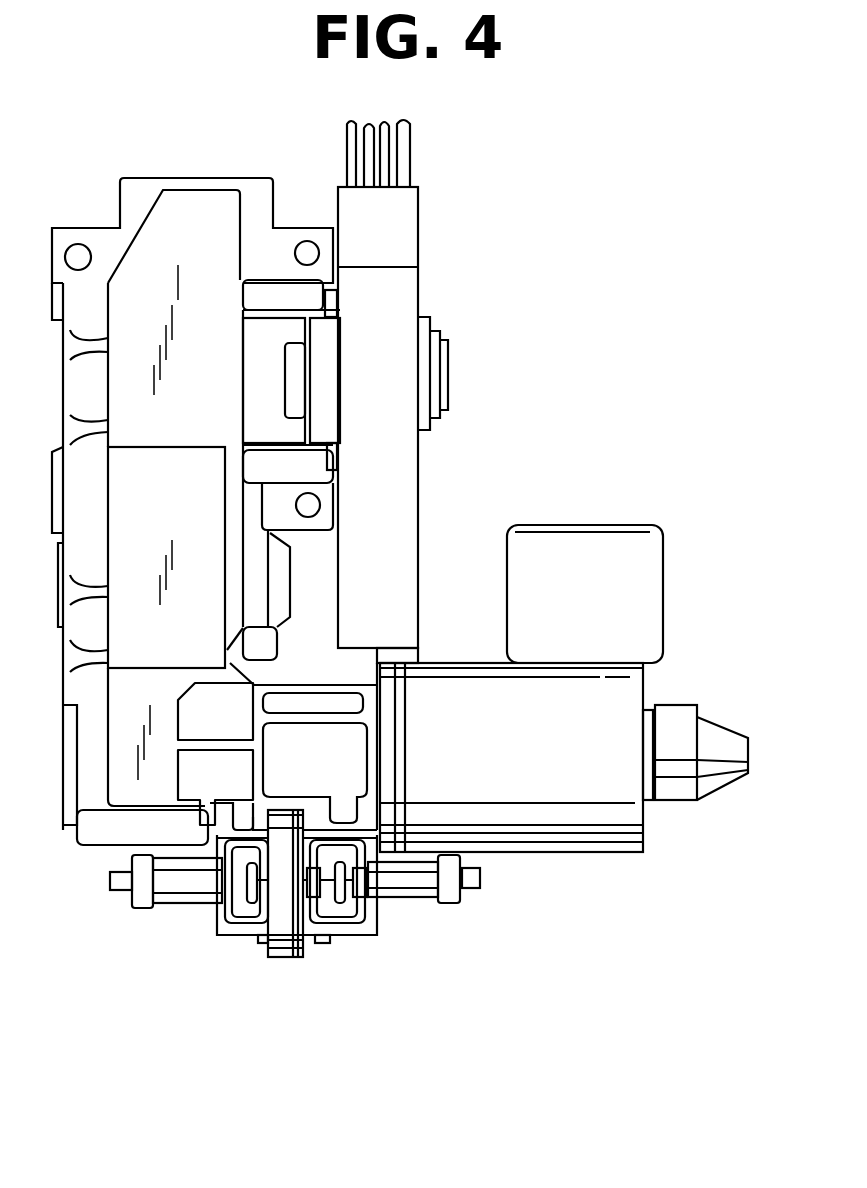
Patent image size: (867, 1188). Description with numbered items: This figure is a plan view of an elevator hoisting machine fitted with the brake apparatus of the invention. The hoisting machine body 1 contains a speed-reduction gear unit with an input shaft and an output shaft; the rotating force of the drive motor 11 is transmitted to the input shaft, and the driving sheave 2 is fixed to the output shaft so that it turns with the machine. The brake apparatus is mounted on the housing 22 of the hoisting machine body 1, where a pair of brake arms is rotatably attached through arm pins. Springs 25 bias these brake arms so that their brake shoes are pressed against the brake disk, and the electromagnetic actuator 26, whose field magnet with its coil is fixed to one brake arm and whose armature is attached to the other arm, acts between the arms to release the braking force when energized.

The hoisting machine body 1 is at (120, 192).
The driving sheave 2 is at (412, 168).
The drive motor 11 is at (570, 830).
The housing 22 is at (222, 910).
The spring 25 is at (410, 895).
The electromagnetic actuator 26 is at (283, 958).